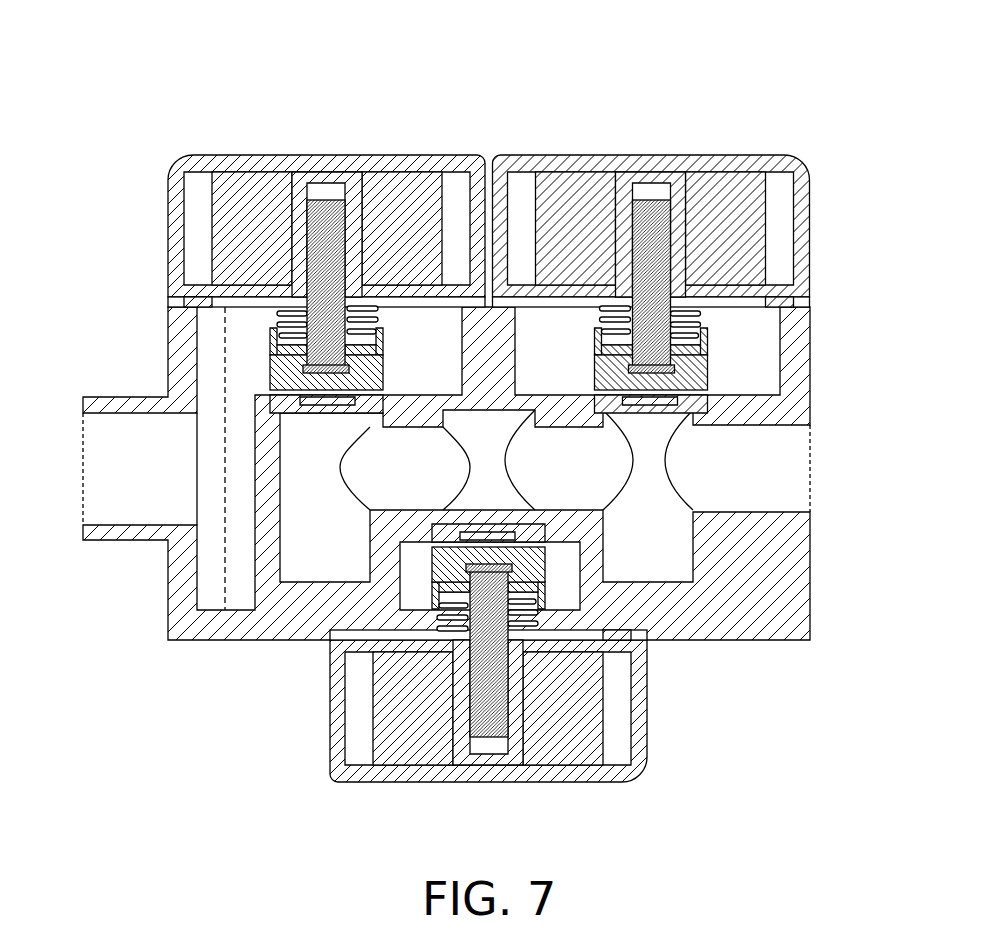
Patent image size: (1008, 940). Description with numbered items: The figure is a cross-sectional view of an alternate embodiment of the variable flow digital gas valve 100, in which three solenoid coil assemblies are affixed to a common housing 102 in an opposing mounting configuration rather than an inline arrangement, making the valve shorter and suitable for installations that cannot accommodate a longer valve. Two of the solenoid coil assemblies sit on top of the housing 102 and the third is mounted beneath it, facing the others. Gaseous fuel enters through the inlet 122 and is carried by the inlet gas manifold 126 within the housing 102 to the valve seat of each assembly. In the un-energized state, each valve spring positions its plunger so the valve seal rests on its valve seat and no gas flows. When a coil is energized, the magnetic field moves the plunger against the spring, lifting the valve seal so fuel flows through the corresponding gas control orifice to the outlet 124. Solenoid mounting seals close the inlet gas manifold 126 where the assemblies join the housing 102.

The variable flow digital gas valve 100 is at (148, 68).
The housing 102 is at (776, 636).
The inlet 122 is at (120, 518).
The outlet 124 is at (785, 462).
The inlet gas manifold 126 is at (200, 343).